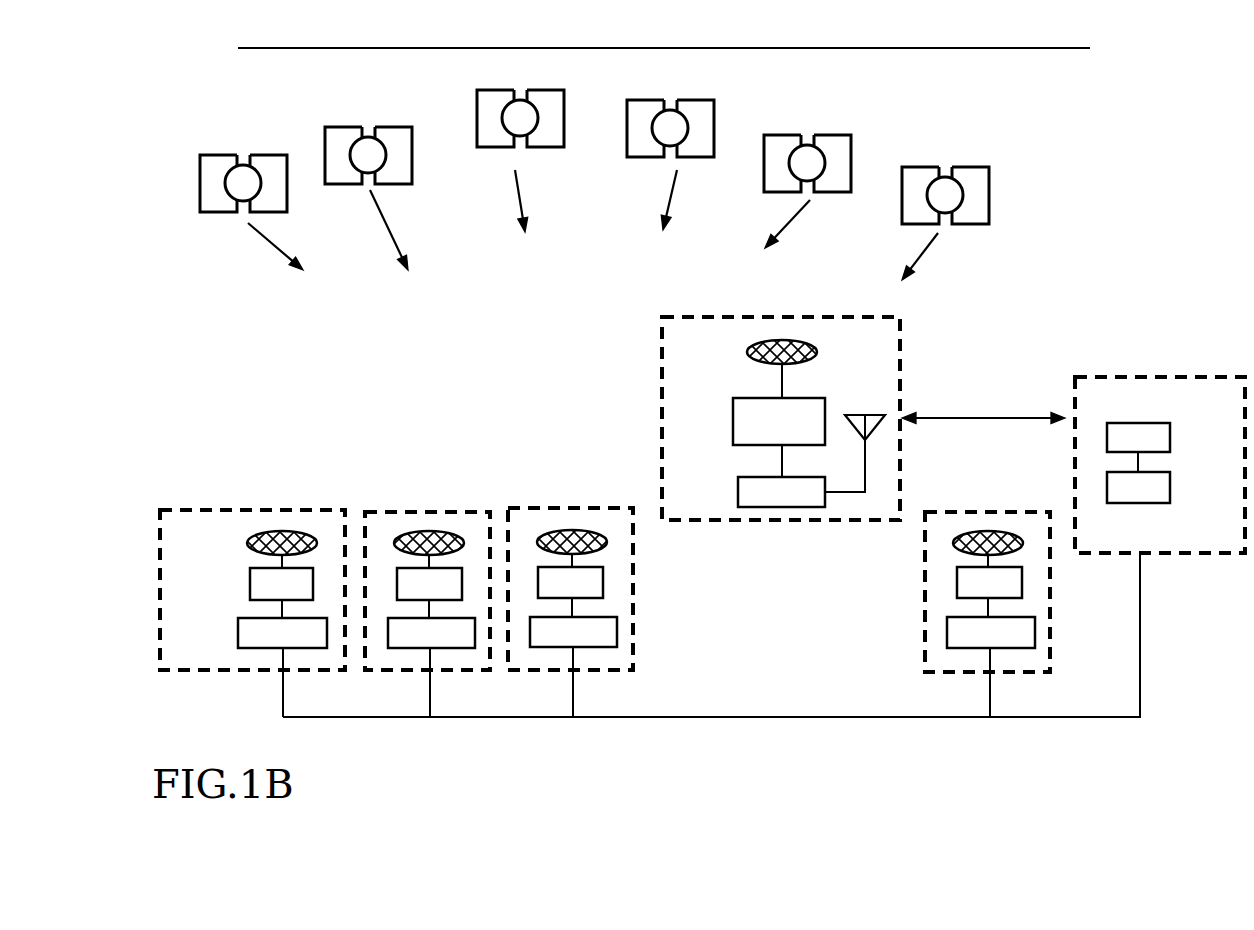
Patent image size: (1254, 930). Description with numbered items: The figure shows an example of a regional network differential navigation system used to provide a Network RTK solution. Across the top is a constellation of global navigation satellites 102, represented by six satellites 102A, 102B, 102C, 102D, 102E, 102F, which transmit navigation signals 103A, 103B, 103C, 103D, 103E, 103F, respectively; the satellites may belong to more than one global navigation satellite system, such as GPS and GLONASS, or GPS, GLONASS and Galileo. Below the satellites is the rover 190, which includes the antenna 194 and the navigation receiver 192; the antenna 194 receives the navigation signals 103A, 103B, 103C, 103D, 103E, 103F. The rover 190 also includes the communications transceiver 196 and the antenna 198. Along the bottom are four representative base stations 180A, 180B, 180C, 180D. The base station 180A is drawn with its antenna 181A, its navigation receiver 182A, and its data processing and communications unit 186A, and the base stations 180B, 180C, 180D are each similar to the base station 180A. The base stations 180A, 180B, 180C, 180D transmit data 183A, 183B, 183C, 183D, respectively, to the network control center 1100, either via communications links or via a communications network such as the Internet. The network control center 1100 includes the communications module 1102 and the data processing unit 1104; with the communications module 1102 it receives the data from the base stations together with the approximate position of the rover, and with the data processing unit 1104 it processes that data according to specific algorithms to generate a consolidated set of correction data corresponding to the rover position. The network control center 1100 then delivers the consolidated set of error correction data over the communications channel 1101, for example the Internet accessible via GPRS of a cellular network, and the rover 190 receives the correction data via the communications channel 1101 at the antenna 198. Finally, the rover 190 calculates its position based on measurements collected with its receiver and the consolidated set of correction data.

The constellation of global navigation satellites 102 is at (687, 66).
The navigation satellite 102A is at (238, 48).
The navigation satellite 102B is at (373, 48).
The navigation satellite 102C is at (520, 48).
The navigation satellite 102D is at (673, 48).
The navigation satellite 102E is at (810, 48).
The navigation satellite 102F is at (945, 48).
The navigation signal 103A is at (256, 250).
The navigation signal 103B is at (413, 230).
The navigation signal 103C is at (549, 201).
The navigation signal 103D is at (697, 200).
The navigation signal 103E is at (812, 224).
The navigation signal 103F is at (949, 256).
The rover 190 is at (749, 418).
The antenna 194 is at (745, 369).
The navigation receiver 192 is at (749, 437).
The communications transceiver 196 is at (749, 492).
The antenna 198 is at (856, 433).
The communications channel 1101 is at (983, 403).
The network control center 1100 is at (1160, 451).
The communications module 1102 is at (1169, 447).
The data processing unit 1104 is at (1169, 497).
The base station 180A is at (252, 571).
The base station 180B is at (427, 571).
The base station 180C is at (570, 571).
The base station 180D is at (987, 578).
The antenna 181A is at (245, 549).
The navigation receiver 182A is at (243, 593).
The data processing and communications unit 186A is at (249, 633).
The data 183A is at (316, 682).
The data 183B is at (469, 682).
The data 183C is at (610, 682).
The data 183D is at (1024, 682).